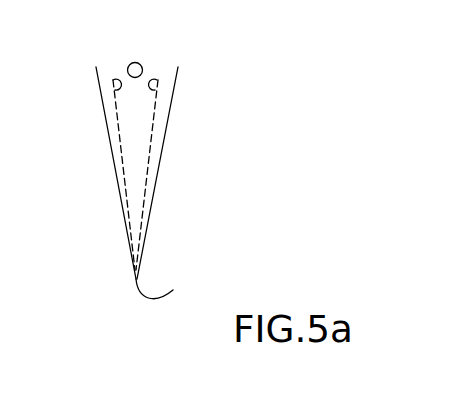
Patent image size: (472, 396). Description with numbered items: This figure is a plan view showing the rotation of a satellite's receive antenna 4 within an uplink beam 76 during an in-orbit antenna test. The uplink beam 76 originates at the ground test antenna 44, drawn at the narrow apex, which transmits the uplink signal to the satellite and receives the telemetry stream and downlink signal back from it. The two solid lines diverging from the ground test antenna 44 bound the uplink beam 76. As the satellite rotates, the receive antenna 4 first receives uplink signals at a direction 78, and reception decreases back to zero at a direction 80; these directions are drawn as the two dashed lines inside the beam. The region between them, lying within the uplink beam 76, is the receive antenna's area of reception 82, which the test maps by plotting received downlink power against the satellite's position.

The receive antenna 4 is at (112, 79).
The direction 78 is at (127, 79).
The direction 80 is at (143, 79).
The area of reception 82 is at (135, 128).
The uplink beam 76 is at (153, 157).
The ground test antenna 44 is at (172, 282).